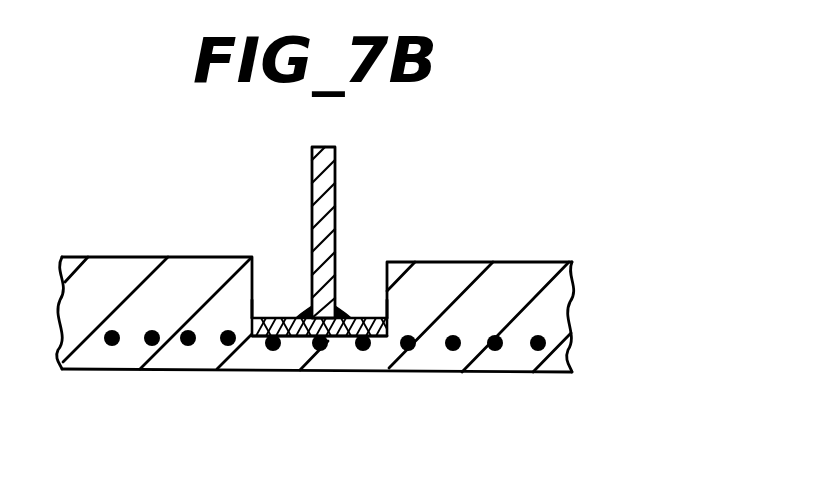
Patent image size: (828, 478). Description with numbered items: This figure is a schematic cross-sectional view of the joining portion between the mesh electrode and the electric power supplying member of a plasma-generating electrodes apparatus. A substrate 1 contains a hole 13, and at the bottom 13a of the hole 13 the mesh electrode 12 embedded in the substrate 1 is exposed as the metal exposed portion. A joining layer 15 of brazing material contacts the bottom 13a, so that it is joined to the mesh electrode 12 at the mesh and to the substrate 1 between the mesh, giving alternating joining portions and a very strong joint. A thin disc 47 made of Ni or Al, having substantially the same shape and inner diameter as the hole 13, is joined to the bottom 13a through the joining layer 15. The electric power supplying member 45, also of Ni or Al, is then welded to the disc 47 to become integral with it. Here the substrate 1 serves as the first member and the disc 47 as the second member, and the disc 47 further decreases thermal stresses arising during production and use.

The substrate 1 is at (538, 318).
The mesh electrode 12 is at (453, 343).
The hole 13 is at (253, 280).
The bottom of the hole 13a is at (337, 340).
The joining layer 15 is at (378, 340).
The electric power supplying member 45 is at (335, 173).
The thin disc 47 is at (367, 315).